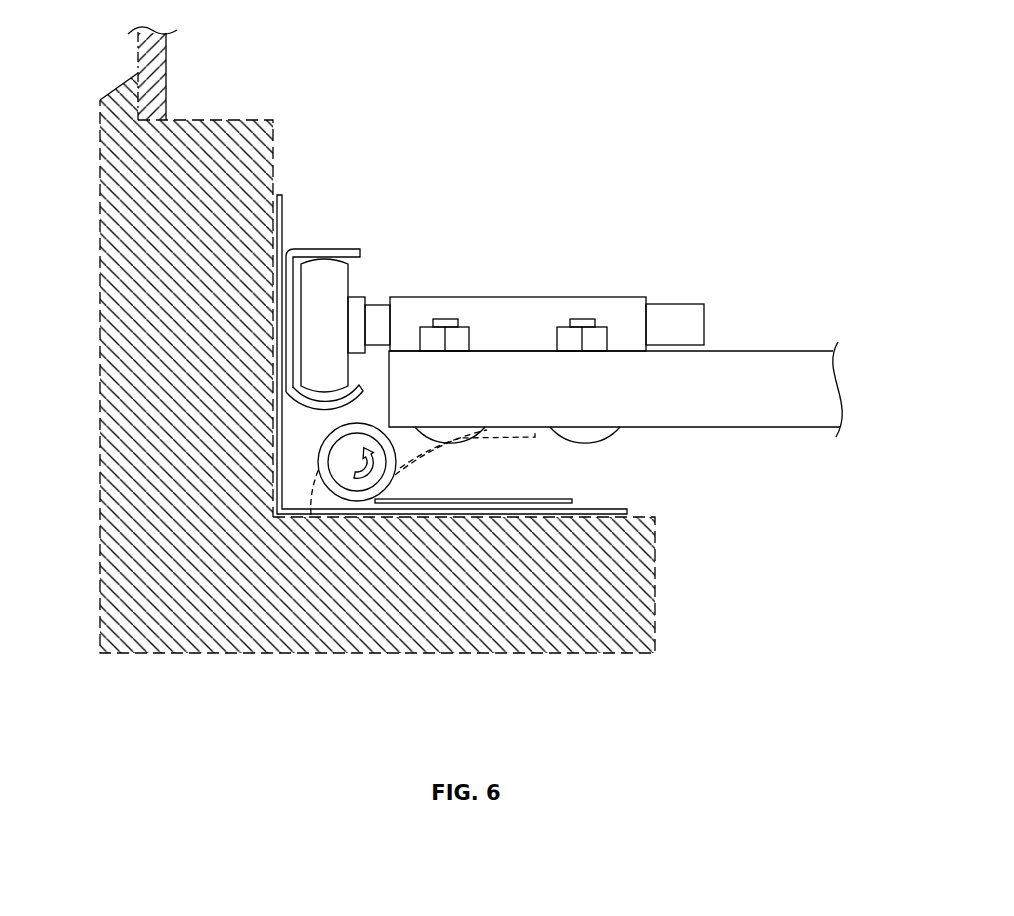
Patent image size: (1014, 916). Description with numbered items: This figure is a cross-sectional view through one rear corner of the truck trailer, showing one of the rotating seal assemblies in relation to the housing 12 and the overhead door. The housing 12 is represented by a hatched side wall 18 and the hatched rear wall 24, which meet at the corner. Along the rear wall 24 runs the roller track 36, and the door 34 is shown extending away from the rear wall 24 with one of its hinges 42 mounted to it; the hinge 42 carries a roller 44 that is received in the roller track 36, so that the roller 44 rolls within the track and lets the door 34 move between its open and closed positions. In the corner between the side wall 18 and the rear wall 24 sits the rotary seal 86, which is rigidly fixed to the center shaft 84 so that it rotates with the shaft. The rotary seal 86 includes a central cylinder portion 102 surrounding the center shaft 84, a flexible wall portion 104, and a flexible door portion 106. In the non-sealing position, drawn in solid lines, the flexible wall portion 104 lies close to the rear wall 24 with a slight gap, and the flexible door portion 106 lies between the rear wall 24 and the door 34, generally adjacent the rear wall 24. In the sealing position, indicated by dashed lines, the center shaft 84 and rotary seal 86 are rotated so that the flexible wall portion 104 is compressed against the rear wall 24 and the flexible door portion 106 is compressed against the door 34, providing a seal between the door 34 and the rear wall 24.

The housing 12 is at (90, 665).
The side wall 18 is at (140, 53).
The rear wall 24 is at (590, 627).
The door 34 is at (858, 386).
The roller track 36 is at (307, 249).
The hinge 42 is at (622, 307).
The roller 44 is at (328, 282).
The center shaft 84 is at (355, 463).
The rotary seal 86 is at (357, 521).
The central cylinder portion 102 is at (340, 497).
The flexible wall portion 104 is at (313, 465).
The flexible door portion 106 is at (530, 499).